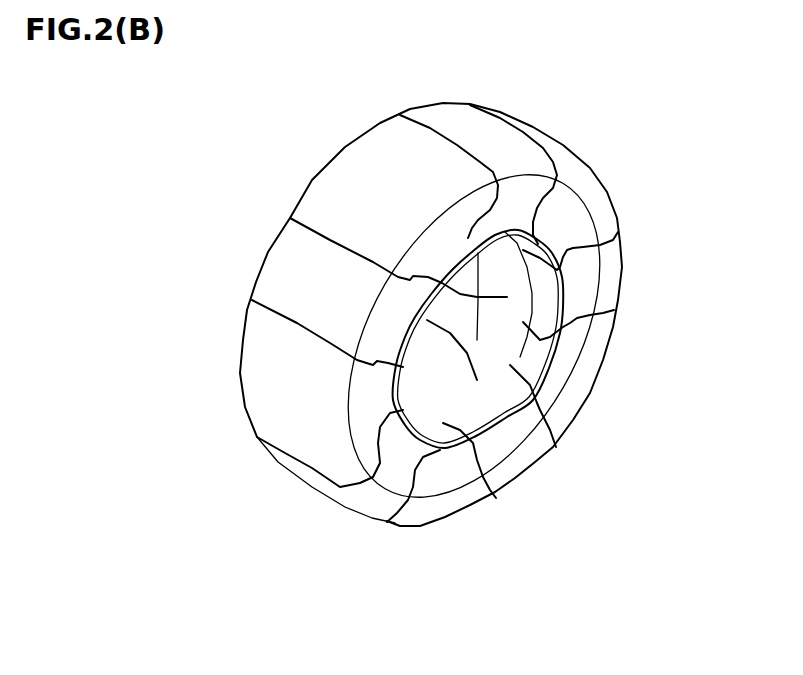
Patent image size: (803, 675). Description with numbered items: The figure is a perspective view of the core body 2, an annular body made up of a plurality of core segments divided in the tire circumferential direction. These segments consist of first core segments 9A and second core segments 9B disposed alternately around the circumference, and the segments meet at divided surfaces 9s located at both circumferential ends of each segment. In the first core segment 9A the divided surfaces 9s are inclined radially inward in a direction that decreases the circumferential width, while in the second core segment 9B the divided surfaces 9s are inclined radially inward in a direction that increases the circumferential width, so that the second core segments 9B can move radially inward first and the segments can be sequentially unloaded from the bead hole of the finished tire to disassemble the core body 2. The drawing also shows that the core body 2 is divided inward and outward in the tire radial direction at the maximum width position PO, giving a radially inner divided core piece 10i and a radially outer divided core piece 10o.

The core body 2 is at (286, 163).
The first core segment 9A is at (587, 360).
The second core segment 9B is at (608, 257).
The divided surface 9s is at (583, 317).
The divided core piece (radially outer) 10o is at (433, 513).
The divided core piece (radially inner) 10i is at (453, 470).
The maximum width position PO is at (385, 490).